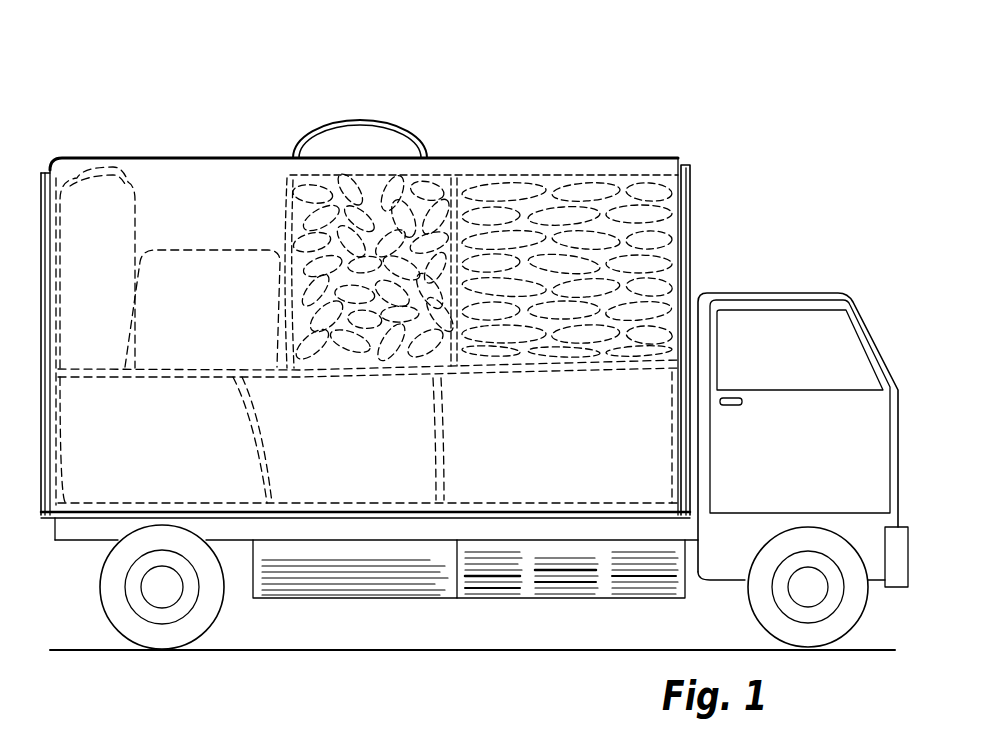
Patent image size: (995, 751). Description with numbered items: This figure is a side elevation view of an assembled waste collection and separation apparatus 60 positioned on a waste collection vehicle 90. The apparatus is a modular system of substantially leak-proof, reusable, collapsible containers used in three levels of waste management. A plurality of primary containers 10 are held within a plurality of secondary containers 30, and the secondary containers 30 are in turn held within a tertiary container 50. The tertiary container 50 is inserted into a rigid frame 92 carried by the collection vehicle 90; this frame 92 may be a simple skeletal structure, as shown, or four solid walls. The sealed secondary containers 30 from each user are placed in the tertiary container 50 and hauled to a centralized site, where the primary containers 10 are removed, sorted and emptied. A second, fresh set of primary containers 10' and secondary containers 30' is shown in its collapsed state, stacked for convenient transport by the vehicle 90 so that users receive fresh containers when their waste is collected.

The waste collection and separation apparatus 60 is at (111, 128).
The secondary containers 30 is at (368, 278).
The primary containers 10 is at (453, 223).
The tertiary container 50 is at (444, 157).
The rigid frame 92 is at (693, 198).
The waste collection vehicle 90 is at (812, 270).
The secondary containers 30' is at (355, 593).
The primary containers 10' is at (591, 592).